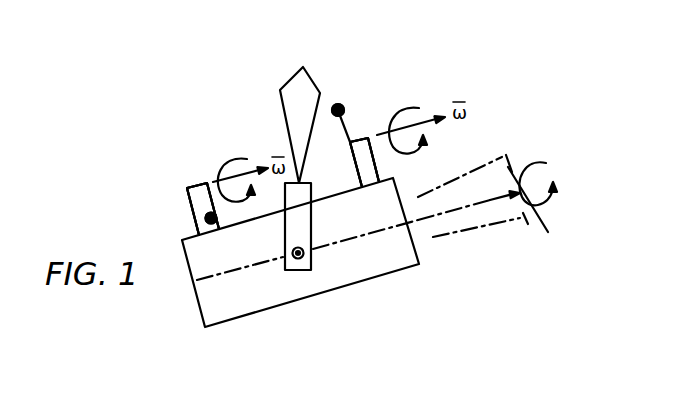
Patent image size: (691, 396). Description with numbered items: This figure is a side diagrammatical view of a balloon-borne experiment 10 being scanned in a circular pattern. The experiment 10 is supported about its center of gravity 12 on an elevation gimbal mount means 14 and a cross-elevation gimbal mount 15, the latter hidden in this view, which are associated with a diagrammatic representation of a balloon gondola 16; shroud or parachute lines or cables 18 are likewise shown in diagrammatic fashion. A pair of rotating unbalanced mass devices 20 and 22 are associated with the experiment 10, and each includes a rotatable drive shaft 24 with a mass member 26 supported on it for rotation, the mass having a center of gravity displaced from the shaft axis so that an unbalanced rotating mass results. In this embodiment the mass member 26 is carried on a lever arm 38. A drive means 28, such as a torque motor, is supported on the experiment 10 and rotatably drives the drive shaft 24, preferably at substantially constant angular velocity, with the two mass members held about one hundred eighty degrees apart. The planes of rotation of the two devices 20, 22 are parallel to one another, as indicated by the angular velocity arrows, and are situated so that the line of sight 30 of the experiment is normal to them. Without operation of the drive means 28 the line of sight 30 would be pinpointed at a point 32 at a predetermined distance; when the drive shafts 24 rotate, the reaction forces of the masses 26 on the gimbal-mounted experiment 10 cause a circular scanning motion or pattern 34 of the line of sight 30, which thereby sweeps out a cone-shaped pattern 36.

The balloon-borne experiment 10 is at (355, 283).
The center of gravity 12 is at (305, 268).
The elevation gimbal mount means 14 is at (303, 249).
The cross-elevation gimbal mount 15 is at (305, 254).
The balloon gondola 16 is at (280, 249).
The shroud or parachute lines or cables 18 is at (303, 67).
The rotating unbalanced mass device 20 is at (400, 65).
The rotating unbalanced mass device 22 is at (144, 160).
The rotatable drive shaft 24 is at (194, 187).
The mass member 26 is at (214, 222).
The drive means 28 is at (193, 216).
The line of sight 30 is at (460, 207).
The point 32 is at (538, 210).
The circular scanning motion or pattern 34 is at (527, 222).
The cone-shaped pattern 36 is at (494, 158).
The lever arm 38 is at (209, 213).